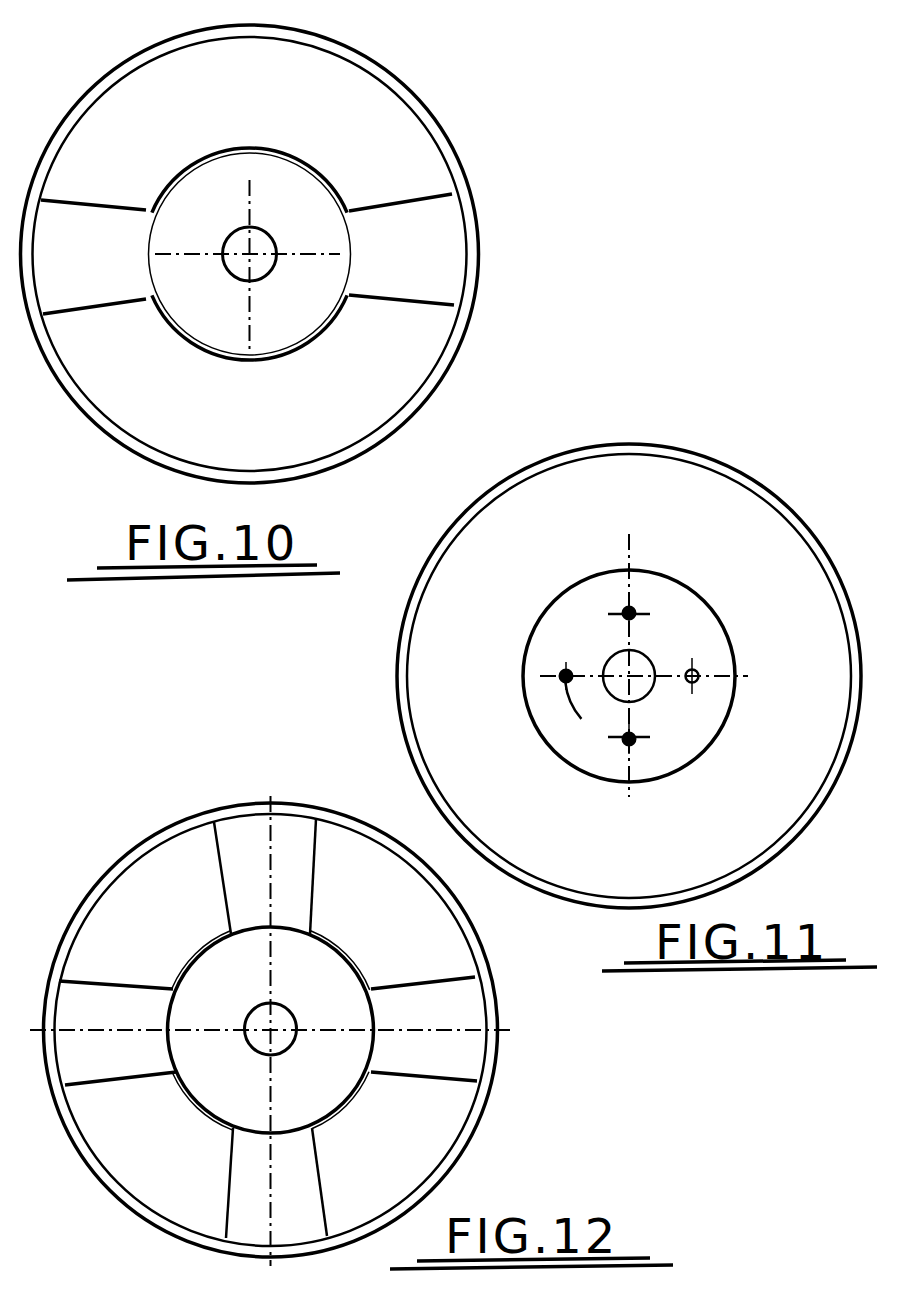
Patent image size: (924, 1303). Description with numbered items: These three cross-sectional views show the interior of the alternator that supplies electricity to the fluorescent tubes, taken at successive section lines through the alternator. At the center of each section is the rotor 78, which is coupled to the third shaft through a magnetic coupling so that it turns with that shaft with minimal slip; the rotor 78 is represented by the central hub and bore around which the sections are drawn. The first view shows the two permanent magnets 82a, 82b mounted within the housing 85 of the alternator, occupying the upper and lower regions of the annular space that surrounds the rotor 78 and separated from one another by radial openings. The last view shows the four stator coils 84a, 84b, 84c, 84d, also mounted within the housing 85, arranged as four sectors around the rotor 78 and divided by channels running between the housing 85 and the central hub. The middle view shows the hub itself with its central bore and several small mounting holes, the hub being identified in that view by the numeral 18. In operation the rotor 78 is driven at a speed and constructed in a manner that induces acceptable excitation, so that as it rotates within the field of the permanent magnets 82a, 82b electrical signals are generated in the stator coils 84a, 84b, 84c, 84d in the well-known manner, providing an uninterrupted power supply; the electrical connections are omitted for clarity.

In FIG. 11, the hub with central bore and mounting holes 18 is at (648, 660).
In FIG. 10, the rotor 78 is at (353, 258).
In FIG. 12, the rotor 78 is at (374, 1033).
In FIG. 10, the permanent magnet 82a is at (288, 115).
In FIG. 10, the permanent magnet 82b is at (316, 425).
In FIG. 12, the stator coil 84a is at (198, 921).
In FIG. 12, the stator coil 84b is at (404, 921).
In FIG. 12, the stator coil 84c is at (403, 1169).
In FIG. 12, the stator coil 84d is at (187, 1152).
In FIG. 10, the housing 85 is at (430, 120).
In FIG. 12, the housing 85 is at (472, 959).